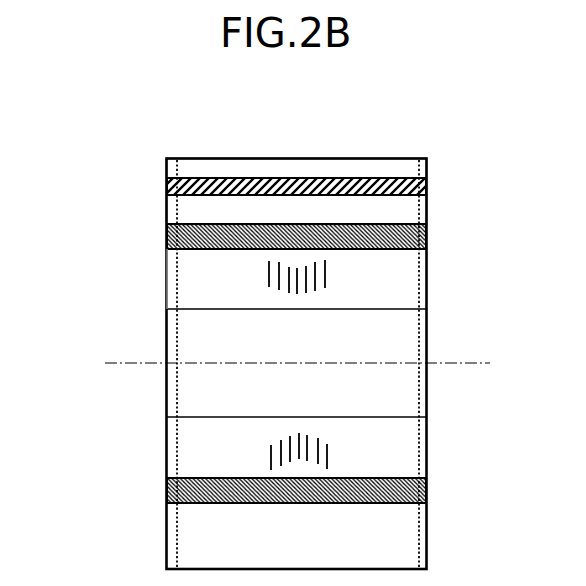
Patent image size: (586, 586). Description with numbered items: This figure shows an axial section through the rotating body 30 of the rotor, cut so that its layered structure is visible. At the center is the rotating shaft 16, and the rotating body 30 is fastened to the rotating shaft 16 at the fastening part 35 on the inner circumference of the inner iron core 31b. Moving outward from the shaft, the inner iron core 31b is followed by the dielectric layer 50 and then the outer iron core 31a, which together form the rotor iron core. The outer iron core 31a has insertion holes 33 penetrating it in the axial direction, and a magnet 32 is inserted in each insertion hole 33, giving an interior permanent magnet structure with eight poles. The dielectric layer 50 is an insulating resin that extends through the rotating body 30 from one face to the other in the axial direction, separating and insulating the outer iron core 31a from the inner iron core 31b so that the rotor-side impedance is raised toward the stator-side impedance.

The rotating body 30 is at (332, 158).
The outer iron core 31a is at (185, 208).
The inner iron core 31b is at (188, 292).
The magnet 32 is at (253, 183).
The insertion hole 33 is at (317, 177).
The dielectric layer 50 is at (167, 242).
The fastening part 35 is at (185, 418).
The rotating shaft 16 is at (407, 333).